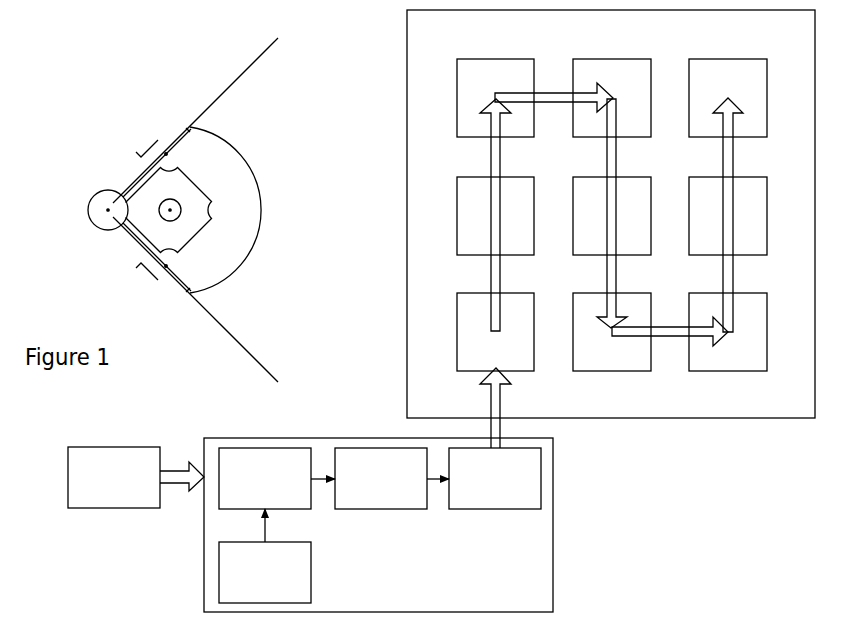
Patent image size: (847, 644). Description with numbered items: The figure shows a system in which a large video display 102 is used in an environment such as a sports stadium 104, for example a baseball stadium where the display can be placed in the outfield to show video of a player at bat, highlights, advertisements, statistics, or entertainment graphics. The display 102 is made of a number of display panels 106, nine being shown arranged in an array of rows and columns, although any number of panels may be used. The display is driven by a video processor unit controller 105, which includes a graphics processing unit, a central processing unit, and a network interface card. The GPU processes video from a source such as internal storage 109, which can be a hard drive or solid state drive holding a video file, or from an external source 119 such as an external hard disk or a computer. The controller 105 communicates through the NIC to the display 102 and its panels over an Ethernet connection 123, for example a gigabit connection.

The video display 102 is at (586, 229).
The sports stadium 104 is at (119, 136).
The video processor unit controller 105 is at (378, 525).
The display panel 106 is at (462, 205).
The internal storage 109 is at (265, 556).
The external source 119 is at (136, 477).
The Ethernet connection 123 is at (495, 151).